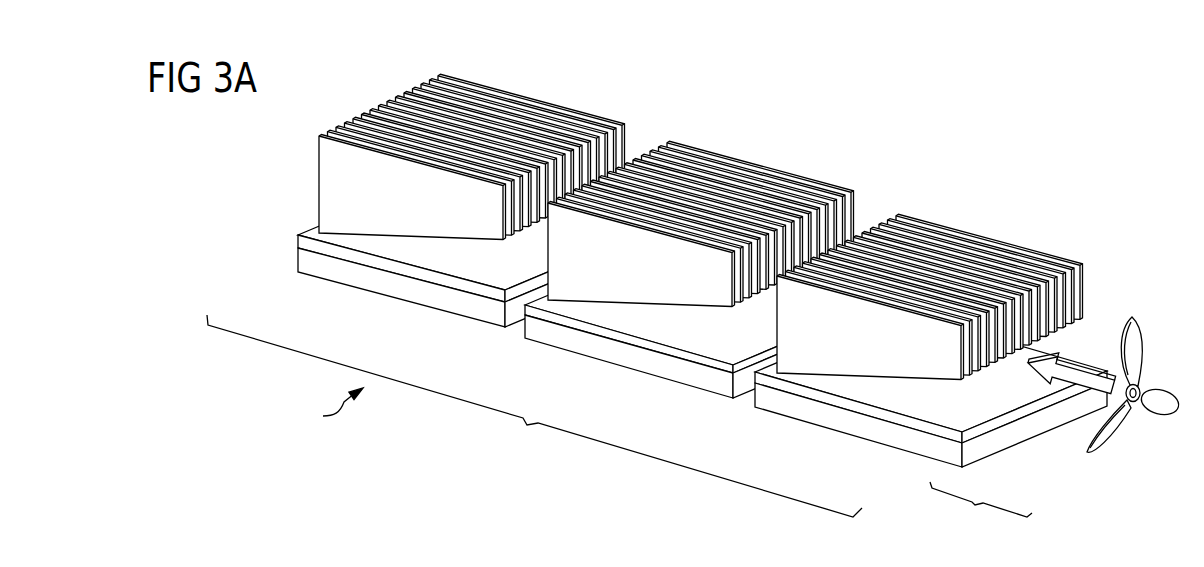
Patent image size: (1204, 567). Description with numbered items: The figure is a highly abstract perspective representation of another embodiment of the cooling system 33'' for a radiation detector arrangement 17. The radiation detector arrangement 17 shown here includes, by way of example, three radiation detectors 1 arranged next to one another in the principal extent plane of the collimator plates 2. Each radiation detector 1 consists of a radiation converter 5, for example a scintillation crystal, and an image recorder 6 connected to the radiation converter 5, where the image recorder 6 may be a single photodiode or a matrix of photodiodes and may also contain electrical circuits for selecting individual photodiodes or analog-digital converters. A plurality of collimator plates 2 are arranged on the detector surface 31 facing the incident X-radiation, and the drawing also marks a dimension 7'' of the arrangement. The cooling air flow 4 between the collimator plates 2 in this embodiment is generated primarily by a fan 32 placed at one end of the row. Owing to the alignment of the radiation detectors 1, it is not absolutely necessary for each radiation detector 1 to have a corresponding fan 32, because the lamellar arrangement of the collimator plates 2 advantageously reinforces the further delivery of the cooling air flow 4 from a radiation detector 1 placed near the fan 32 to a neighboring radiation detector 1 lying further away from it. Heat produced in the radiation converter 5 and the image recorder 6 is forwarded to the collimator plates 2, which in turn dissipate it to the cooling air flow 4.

The radiation detector 1 is at (696, 270).
The collimator plates 2 is at (356, 117).
The cooling air flow 4 is at (1082, 376).
The radiation converter 5 is at (342, 254).
The image recorder 6 is at (373, 283).
The module spacing 7'' is at (981, 513).
The radiation detector arrangement 17 is at (534, 416).
The detector surface 31 is at (316, 232).
The fan 32 is at (1158, 400).
The cooling system 33'' is at (325, 414).